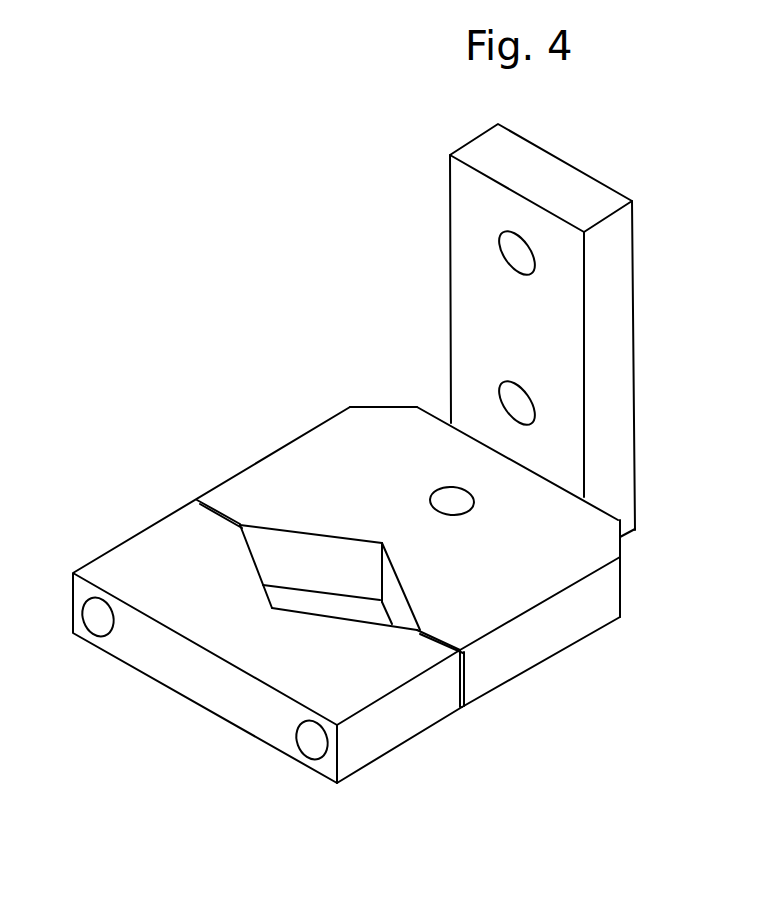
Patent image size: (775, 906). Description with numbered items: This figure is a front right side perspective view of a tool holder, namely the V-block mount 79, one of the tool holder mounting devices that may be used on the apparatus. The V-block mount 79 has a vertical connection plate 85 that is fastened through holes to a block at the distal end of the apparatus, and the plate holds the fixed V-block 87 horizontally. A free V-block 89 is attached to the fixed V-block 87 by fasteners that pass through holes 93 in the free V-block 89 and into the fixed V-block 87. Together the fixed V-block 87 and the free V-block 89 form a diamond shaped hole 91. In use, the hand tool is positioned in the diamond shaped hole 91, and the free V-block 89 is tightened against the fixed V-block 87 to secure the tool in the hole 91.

The V-block mount 79 is at (391, 453).
The vertical connection plate 85 is at (613, 340).
The fixed V-block 87 is at (530, 573).
The free V-block 89 is at (370, 668).
The diamond shaped hole 91 is at (328, 607).
The holes 93 is at (113, 652).